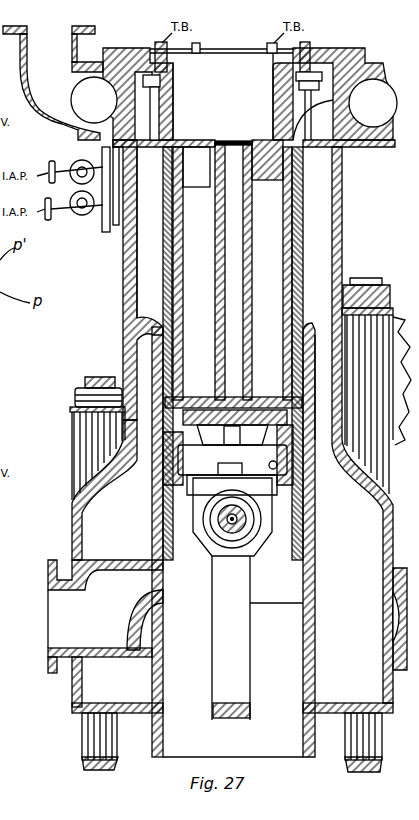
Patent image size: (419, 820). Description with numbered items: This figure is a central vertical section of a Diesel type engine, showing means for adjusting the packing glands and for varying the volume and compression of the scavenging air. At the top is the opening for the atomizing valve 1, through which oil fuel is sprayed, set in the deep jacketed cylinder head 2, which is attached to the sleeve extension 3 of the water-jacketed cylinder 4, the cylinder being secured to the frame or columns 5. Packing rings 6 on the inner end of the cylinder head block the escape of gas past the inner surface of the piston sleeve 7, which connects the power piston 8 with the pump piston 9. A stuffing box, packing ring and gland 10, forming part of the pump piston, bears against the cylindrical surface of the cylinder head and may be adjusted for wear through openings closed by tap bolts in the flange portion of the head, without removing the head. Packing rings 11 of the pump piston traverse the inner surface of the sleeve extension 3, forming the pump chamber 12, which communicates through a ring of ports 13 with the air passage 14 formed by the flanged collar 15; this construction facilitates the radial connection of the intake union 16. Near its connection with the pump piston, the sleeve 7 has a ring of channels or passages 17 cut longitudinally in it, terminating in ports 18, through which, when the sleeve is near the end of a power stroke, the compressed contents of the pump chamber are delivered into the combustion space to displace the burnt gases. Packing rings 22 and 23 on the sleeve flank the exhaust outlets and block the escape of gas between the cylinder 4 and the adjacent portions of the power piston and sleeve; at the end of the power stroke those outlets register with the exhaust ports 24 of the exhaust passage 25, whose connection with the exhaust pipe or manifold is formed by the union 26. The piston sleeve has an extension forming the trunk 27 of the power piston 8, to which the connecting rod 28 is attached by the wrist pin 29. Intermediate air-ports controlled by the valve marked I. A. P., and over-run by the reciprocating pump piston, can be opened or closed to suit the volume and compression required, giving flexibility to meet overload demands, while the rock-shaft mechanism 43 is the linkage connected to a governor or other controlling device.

The opening for the atomizing valve 1 is at (233, 270).
The cylinder head 2 is at (273, 126).
The sleeve extension 3 is at (344, 213).
The water-jacketed cylinder 4 is at (72, 518).
The frame or columns 5 is at (117, 768).
The packing rings 6 is at (282, 363).
The piston sleeve 7 is at (304, 287).
The power piston 8 is at (320, 387).
The pump piston 9 is at (196, 98).
The stuffing box, packing ring and gland 10 is at (273, 78).
The packing rings 11 is at (110, 67).
The pump chamber 12 is at (148, 232).
The ring of ports 13 is at (159, 101).
The air passage 14 is at (234, 102).
The flanged collar 15 is at (381, 68).
The intake union 16 is at (98, 28).
The channels or passages 17 is at (300, 181).
The ports 18 is at (172, 246).
The packing rings 22 is at (163, 351).
The packing rings 23 is at (158, 492).
The exhaust ports 24 is at (157, 585).
The exhaust passage 25 is at (100, 623).
The union 26 is at (47, 660).
The trunk 27 is at (307, 520).
The connecting rod 28 is at (232, 599).
The wrist pin 29 is at (232, 534).
The rock-shaft mechanism 43 is at (10, 296).